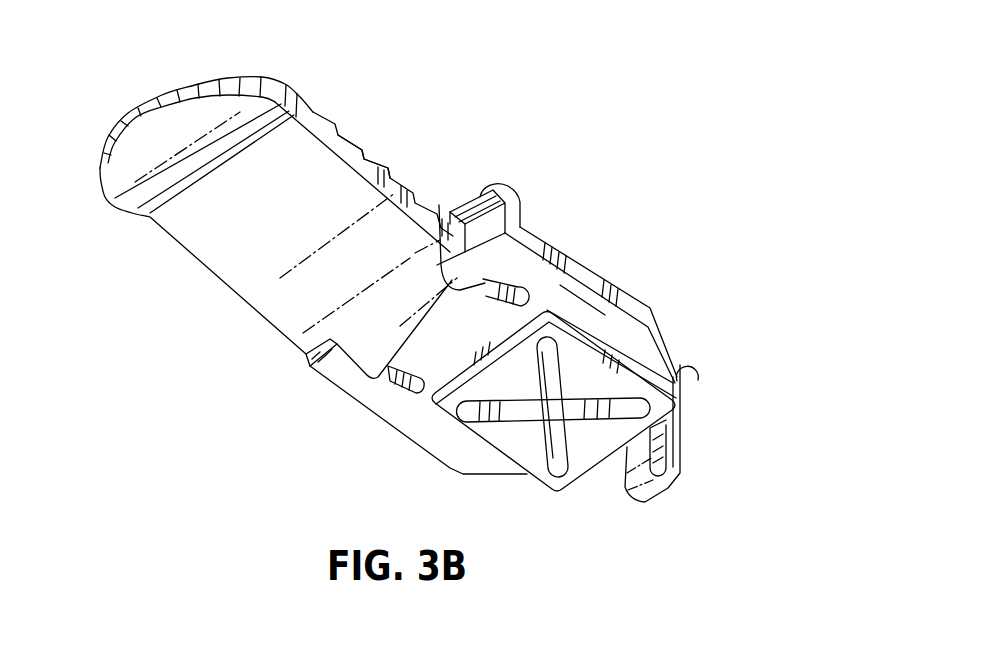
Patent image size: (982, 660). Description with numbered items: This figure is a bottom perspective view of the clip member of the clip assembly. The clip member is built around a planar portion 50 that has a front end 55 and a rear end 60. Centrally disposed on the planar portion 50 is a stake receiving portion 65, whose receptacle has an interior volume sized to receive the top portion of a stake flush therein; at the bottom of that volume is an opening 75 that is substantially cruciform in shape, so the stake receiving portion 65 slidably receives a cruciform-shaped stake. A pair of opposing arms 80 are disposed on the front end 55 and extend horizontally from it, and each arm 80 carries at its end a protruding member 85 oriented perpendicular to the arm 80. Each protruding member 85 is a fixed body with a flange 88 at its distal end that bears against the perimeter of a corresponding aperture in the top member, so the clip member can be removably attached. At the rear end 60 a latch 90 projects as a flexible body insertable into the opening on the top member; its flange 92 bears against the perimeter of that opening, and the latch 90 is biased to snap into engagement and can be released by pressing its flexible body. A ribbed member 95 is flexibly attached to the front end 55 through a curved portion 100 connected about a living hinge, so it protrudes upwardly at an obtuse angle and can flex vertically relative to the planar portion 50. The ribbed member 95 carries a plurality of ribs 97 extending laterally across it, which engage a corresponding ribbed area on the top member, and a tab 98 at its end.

The planar portion 50 is at (607, 291).
The front end 55 is at (364, 427).
The rear end 60 is at (707, 427).
The stake receiving portion 65 is at (512, 452).
The opening 75 is at (557, 468).
The arm 80 is at (527, 226).
The protruding member 85 is at (493, 210).
The flange 88 is at (465, 203).
The latch 90 is at (682, 478).
The flange 92 is at (693, 377).
The ribbed member 95 is at (225, 222).
The ribs 97 is at (365, 149).
The tab 98 is at (155, 113).
The curved portion 100 is at (478, 283).